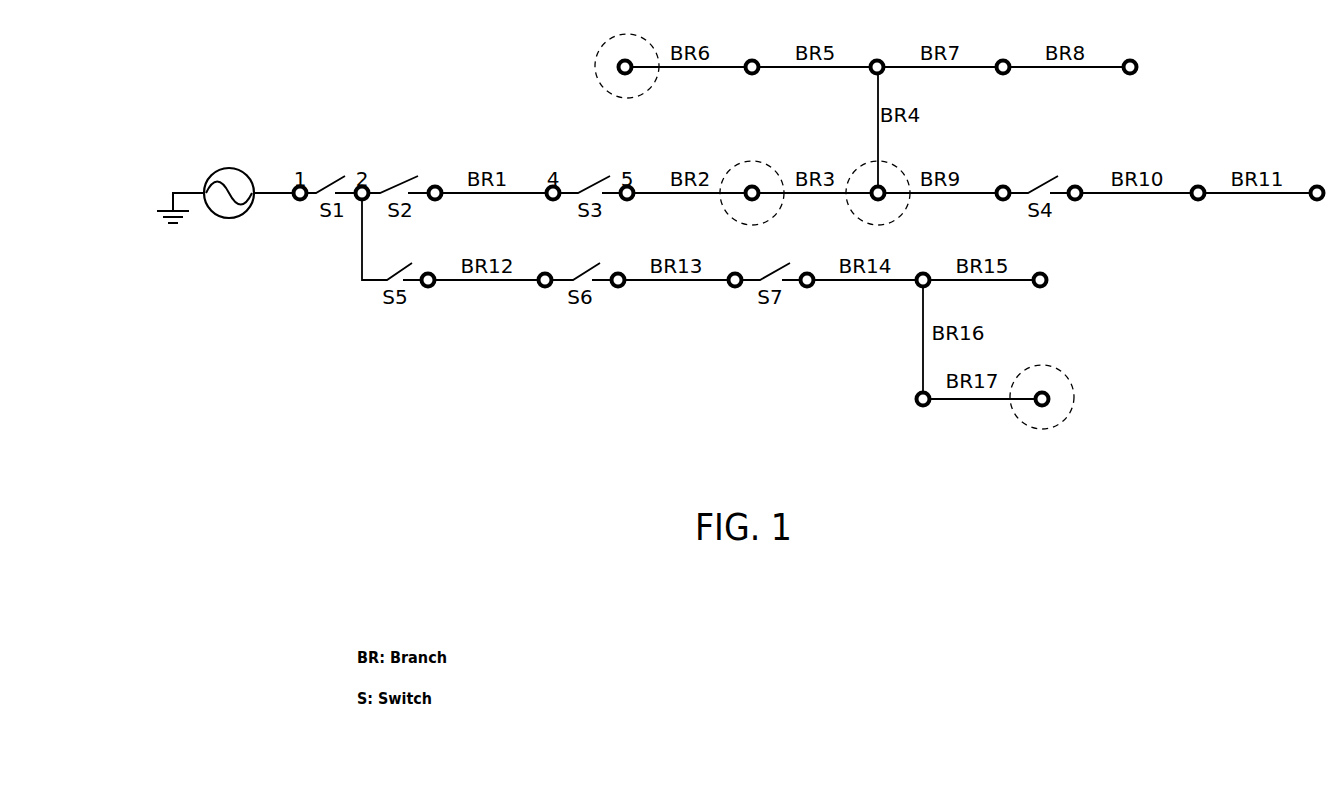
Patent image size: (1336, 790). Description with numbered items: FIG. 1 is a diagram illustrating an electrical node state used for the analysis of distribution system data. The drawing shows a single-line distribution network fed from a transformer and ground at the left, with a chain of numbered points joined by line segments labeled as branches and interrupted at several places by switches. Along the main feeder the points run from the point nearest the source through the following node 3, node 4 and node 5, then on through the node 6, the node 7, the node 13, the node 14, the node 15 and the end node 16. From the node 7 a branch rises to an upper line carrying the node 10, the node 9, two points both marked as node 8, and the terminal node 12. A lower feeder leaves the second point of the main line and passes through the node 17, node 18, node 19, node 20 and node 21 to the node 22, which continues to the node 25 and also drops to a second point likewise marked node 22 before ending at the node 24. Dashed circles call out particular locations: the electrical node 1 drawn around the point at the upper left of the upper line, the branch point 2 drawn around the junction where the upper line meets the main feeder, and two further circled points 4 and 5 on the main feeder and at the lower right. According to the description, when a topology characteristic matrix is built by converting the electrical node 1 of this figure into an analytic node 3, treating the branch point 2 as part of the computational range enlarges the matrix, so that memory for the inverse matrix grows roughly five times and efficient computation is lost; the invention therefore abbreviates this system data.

The electrical node 1 is at (598, 89).
The branch point 2 is at (866, 161).
The fourth section (bus 6 area) 4 is at (766, 162).
The fifth section (bus 24 area) 5 is at (1061, 367).
The analytic node 3 is at (435, 183).
The bus 6 is at (752, 183).
The bus 7 is at (872, 183).
The bus 8 is at (940, 56).
The bus 9 is at (752, 57).
The bus 10 is at (624, 56).
The bus 12 is at (1129, 56).
The bus 13 is at (1002, 183).
The bus 14 is at (1074, 183).
The bus 15 is at (1197, 183).
The bus 16 is at (1316, 183).
The bus 17 is at (427, 270).
The bus 18 is at (544, 270).
The bus 19 is at (617, 270).
The bus 20 is at (734, 270).
The bus 21 is at (806, 270).
The bus 22 is at (910, 332).
The bus 24 is at (1039, 388).
The bus 25 is at (1039, 270).